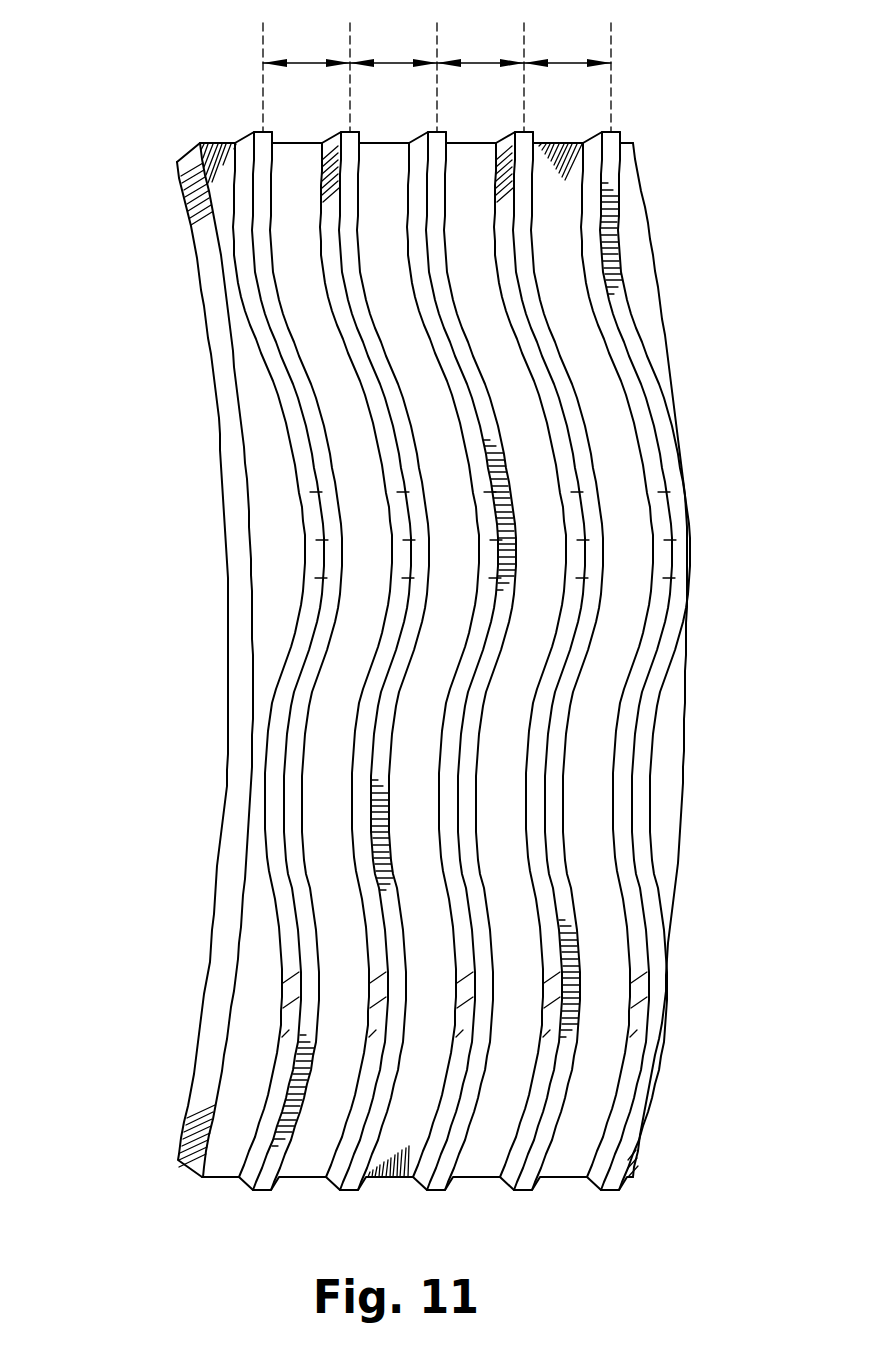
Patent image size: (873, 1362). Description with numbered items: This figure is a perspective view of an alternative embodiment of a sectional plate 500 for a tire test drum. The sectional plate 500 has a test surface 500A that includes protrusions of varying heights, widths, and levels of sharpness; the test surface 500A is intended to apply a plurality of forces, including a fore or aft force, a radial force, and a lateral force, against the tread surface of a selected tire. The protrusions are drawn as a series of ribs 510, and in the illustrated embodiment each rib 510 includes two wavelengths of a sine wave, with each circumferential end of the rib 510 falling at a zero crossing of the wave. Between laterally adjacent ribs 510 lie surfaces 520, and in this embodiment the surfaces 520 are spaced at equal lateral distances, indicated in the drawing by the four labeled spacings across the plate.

The sectional plate 500 is at (423, 599).
The test surface 500A is at (412, 630).
The rib 510 is at (610, 249).
The surfaces between laterally adjacent ribs 520 is at (580, 368).